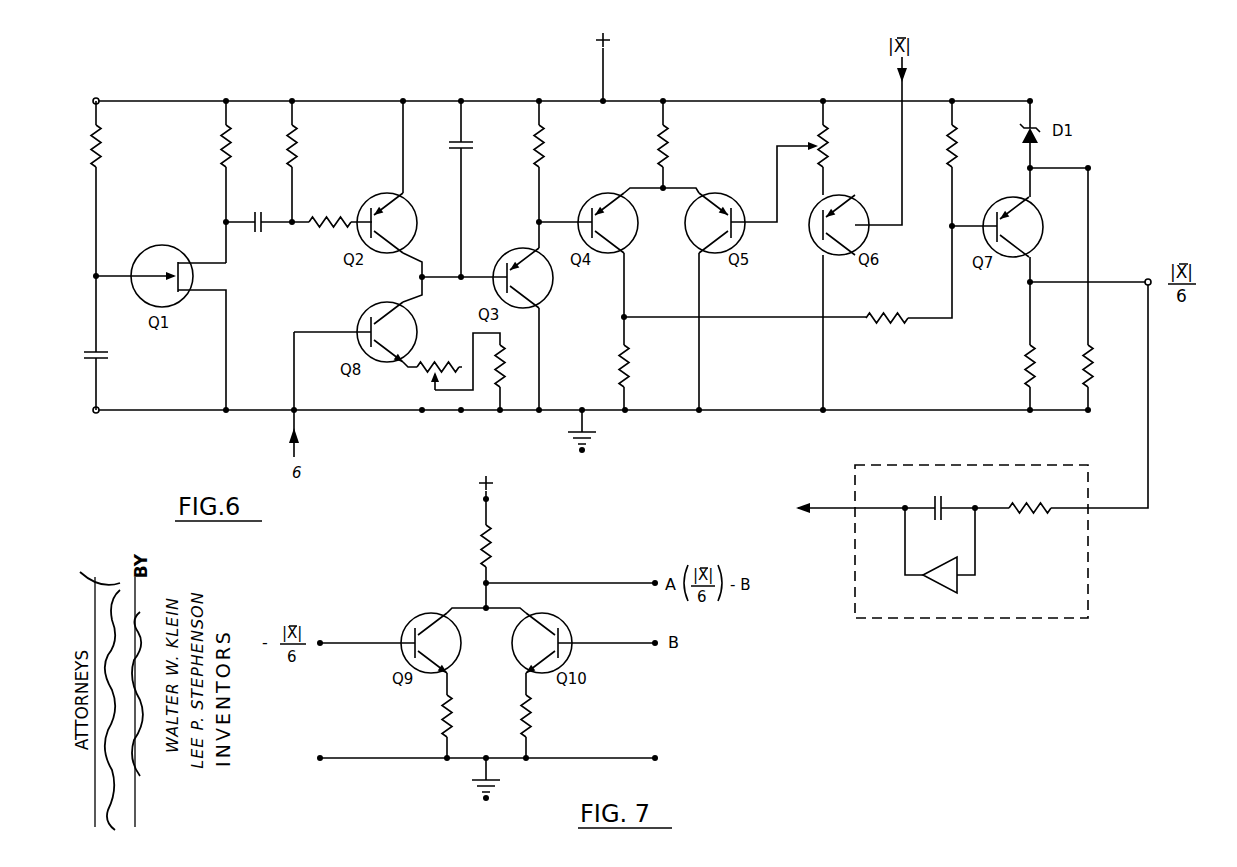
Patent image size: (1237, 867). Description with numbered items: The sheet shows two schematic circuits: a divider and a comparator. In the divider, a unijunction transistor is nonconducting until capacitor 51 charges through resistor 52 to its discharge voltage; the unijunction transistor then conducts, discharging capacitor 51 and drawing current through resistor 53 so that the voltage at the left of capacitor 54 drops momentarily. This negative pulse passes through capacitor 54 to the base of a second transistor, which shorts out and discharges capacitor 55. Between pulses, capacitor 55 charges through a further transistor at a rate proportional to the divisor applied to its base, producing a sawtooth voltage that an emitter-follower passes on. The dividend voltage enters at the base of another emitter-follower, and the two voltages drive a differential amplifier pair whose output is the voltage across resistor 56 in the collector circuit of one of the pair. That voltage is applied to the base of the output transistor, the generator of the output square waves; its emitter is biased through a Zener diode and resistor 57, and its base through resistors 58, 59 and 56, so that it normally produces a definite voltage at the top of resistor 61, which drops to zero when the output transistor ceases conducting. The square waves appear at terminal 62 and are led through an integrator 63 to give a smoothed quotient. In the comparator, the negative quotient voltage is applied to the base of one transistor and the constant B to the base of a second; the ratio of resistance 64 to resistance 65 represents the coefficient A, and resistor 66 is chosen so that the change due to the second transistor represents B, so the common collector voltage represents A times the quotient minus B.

In FIG. 6, the capacitor 51 is at (105, 358).
In FIG. 6, the resistor 52 is at (98, 150).
In FIG. 6, the resistor 53 is at (217, 142).
In FIG. 6, the capacitor 54 is at (265, 232).
In FIG. 6, the capacitor 55 is at (468, 150).
In FIG. 6, the resistor 56 is at (622, 365).
In FIG. 6, the resistor 57 is at (1082, 355).
In FIG. 6, the resistor 58 is at (958, 140).
In FIG. 6, the resistor 59 is at (885, 325).
In FIG. 6, the resistor 61 is at (1022, 365).
In FIG. 6, the terminal 62 is at (1150, 275).
In FIG. 6, the integrator 63 is at (1092, 572).
In FIG. 7, the resistance 64 is at (480, 545).
In FIG. 7, the resistance 65 is at (440, 712).
In FIG. 7, the resistor 66 is at (532, 715).